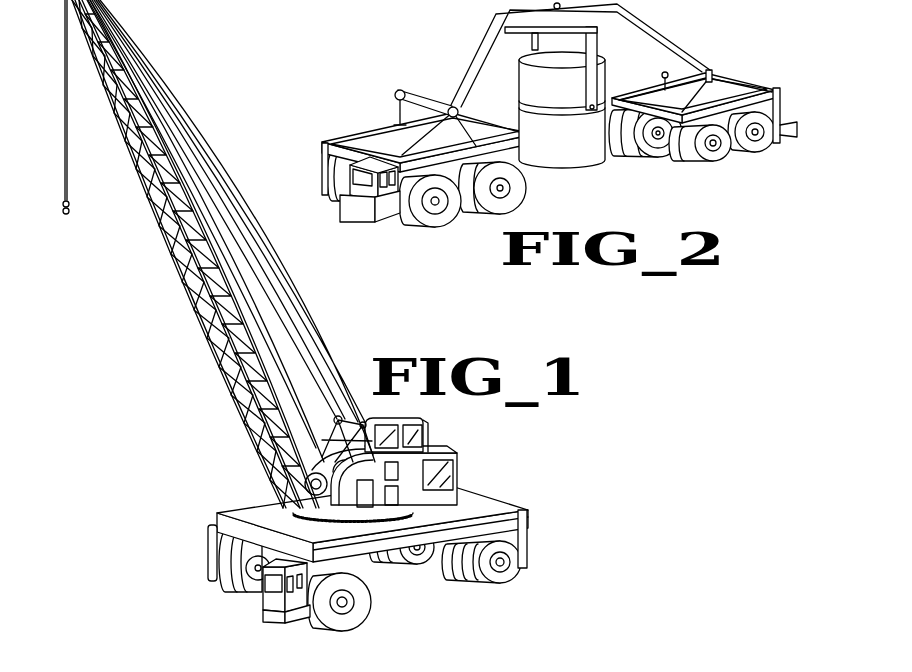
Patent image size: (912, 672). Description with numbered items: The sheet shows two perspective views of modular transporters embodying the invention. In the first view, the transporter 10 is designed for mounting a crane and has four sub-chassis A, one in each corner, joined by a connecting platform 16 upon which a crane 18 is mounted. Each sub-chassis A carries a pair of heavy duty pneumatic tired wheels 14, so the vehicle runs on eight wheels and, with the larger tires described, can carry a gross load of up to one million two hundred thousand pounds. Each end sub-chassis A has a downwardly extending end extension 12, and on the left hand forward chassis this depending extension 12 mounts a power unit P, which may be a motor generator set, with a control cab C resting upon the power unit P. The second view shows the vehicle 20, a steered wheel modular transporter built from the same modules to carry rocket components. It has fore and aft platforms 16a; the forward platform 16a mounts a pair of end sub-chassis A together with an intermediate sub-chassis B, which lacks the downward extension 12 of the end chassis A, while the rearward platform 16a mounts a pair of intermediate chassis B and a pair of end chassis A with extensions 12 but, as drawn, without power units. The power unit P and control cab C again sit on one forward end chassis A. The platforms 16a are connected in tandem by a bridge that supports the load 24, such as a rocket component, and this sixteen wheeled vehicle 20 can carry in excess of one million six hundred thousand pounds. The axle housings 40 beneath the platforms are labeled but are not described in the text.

In FIG. 1, the transporter 10 is at (507, 495).
In FIG. 1, the end extension 12 is at (213, 563).
In FIG. 2, the end extension 12 is at (321, 162).
In FIG. 1, the pneumatic tired wheels 14 is at (303, 617).
In FIG. 2, the pneumatic tired wheels 14 is at (500, 212).
In FIG. 1, the connecting platform 16 is at (528, 511).
In FIG. 2, the fore and aft platforms 16a is at (375, 128).
In FIG. 1, the crane 18 is at (439, 435).
In FIG. 2, the vehicle 20 is at (458, 27).
In FIG. 2, the load 24 is at (570, 144).
In FIG. 1, the axle housing 40 is at (215, 525).
In FIG. 2, the axle housing 40 is at (463, 157).
In FIG. 1, the end sub-chassis A is at (203, 543).
In FIG. 2, the end sub-chassis A is at (314, 179).
In FIG. 2, the intermediate sub-chassis B is at (524, 191).
In FIG. 1, the control cab C is at (272, 597).
In FIG. 2, the control cab C is at (353, 188).
In FIG. 1, the power unit P is at (268, 611).
In FIG. 2, the power unit P is at (355, 210).